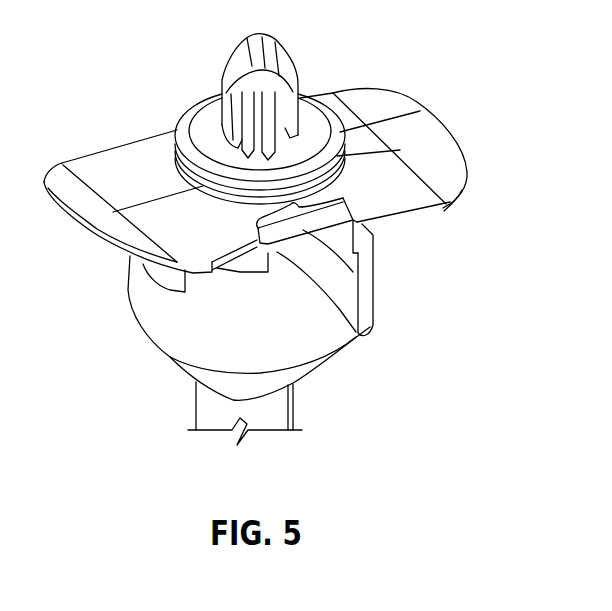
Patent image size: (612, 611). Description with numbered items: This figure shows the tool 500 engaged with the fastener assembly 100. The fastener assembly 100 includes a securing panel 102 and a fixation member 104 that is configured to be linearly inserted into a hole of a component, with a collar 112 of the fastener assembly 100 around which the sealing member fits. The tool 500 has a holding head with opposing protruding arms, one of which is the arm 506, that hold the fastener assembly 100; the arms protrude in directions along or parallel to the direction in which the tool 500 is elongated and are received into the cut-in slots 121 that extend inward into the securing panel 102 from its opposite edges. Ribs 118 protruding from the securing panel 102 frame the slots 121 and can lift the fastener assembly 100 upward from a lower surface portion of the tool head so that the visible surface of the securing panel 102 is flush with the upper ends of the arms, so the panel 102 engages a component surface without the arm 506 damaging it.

The fastener assembly 100 is at (139, 114).
The securing panel 102 is at (380, 100).
The fixation member 104 is at (230, 44).
The collar 112 is at (208, 140).
The cut-in slots 121 is at (420, 111).
The tool 500 is at (146, 383).
The protruding arm 506 is at (372, 270).
The ribs 118 is at (376, 332).